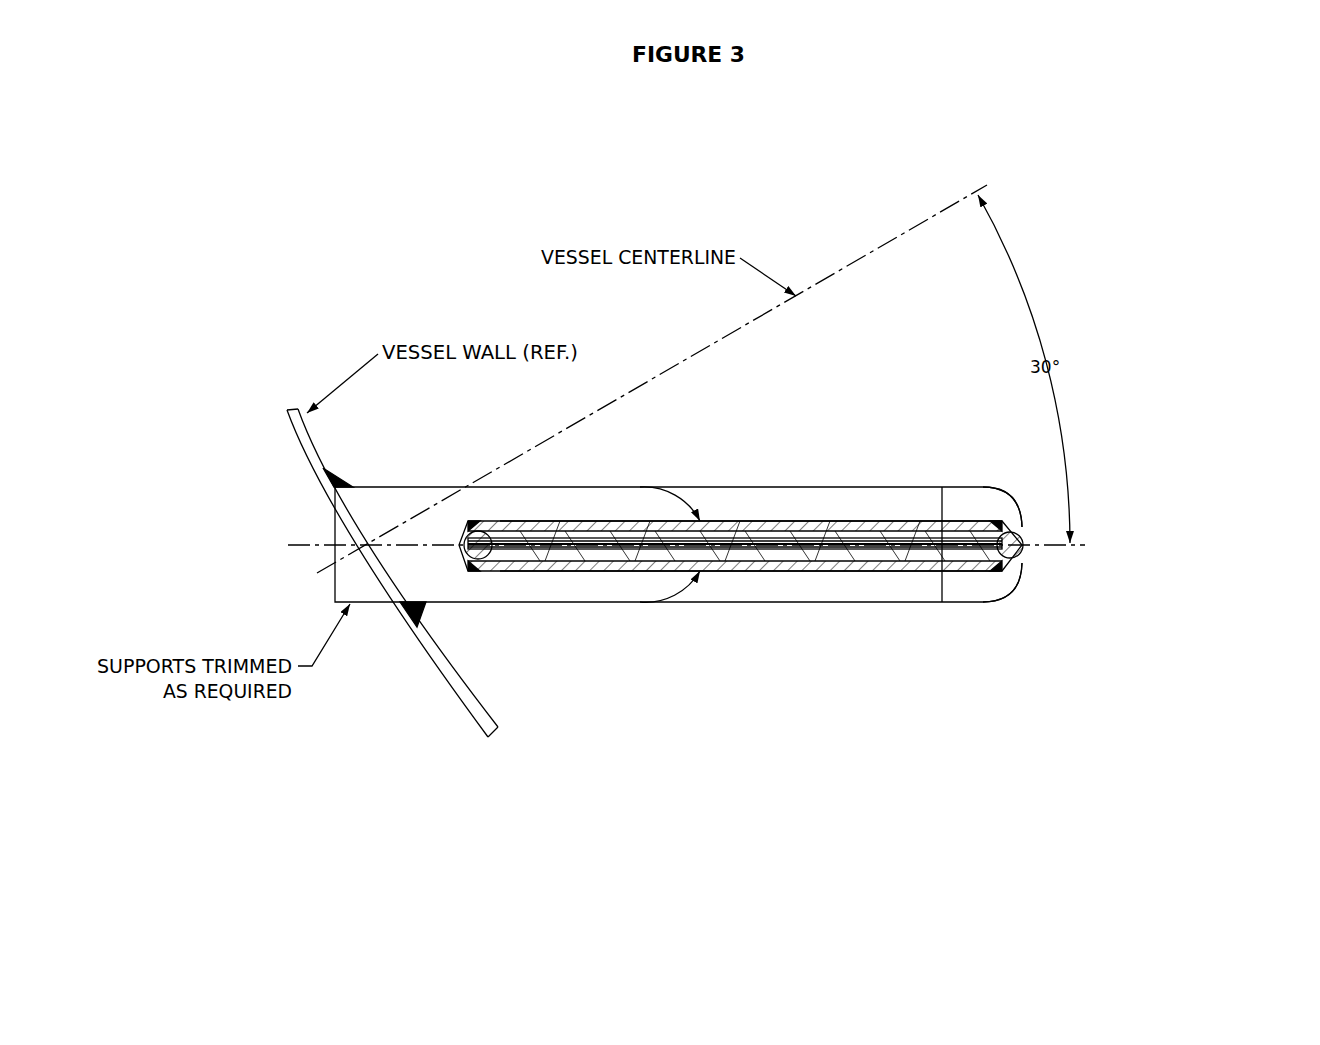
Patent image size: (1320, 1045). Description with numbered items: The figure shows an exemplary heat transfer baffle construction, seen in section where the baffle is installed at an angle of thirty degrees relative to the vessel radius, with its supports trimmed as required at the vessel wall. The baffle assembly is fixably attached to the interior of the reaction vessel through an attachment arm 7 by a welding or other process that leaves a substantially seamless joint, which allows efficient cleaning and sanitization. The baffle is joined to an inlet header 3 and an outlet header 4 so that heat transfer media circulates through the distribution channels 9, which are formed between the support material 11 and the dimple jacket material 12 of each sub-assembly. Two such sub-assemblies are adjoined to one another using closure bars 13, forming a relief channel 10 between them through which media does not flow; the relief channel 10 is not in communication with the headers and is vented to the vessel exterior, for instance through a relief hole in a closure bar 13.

The inlet header 3 is at (740, 497).
The outlet header 4 is at (857, 488).
The attachment arm 7 is at (386, 486).
The distribution channel 9 is at (714, 528).
The relief channel 10 is at (1008, 578).
The support material 11 is at (963, 516).
The dimple jacket material 12 is at (587, 532).
The closure bar 13 is at (479, 554).